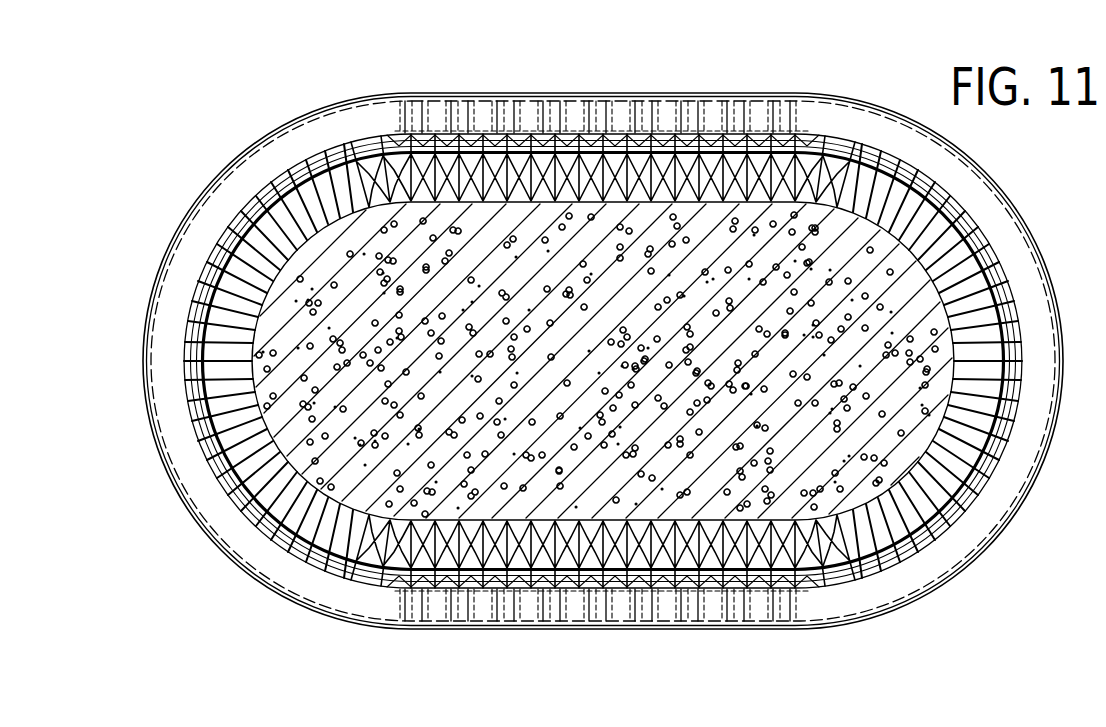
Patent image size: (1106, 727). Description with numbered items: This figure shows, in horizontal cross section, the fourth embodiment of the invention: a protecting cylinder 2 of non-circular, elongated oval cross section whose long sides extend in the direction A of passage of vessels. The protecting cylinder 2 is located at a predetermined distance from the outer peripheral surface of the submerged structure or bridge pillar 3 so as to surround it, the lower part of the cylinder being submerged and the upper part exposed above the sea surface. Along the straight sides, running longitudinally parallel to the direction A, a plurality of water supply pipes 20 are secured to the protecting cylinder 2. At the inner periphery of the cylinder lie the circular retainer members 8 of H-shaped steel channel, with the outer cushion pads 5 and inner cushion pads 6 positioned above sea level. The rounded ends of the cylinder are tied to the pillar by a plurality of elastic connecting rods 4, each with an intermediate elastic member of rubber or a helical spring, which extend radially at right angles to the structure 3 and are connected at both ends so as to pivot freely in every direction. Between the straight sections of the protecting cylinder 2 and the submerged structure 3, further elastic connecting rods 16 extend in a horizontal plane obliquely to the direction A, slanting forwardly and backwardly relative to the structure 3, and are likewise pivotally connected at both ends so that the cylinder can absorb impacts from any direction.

The protecting cylinder 2 is at (872, 100).
The submerged structure or bridge pillar 3 is at (968, 232).
The elastic connecting rods 4 is at (950, 430).
The outer cushion pads 5 is at (955, 577).
The inner cushion pads 6 is at (950, 490).
The retainer members 8 is at (957, 512).
The elastic connecting rods 16 is at (588, 522).
The water supply pipes 20 is at (793, 628).
The direction of passage of vessels A is at (552, 652).